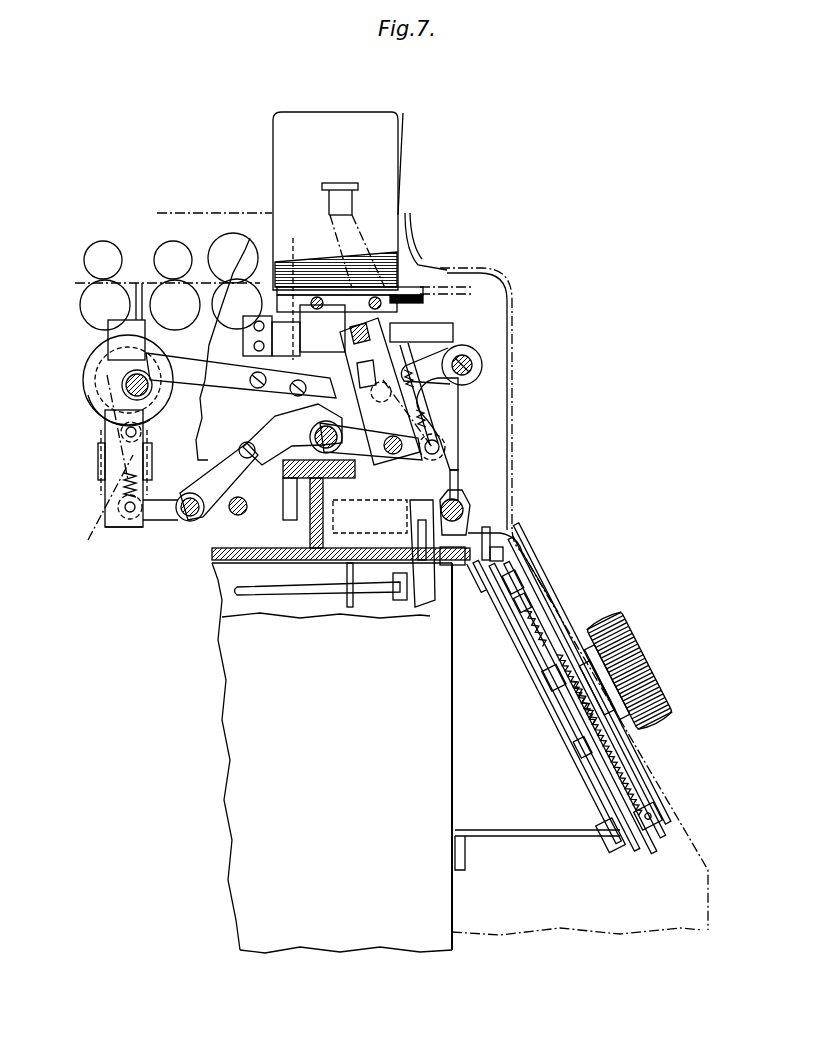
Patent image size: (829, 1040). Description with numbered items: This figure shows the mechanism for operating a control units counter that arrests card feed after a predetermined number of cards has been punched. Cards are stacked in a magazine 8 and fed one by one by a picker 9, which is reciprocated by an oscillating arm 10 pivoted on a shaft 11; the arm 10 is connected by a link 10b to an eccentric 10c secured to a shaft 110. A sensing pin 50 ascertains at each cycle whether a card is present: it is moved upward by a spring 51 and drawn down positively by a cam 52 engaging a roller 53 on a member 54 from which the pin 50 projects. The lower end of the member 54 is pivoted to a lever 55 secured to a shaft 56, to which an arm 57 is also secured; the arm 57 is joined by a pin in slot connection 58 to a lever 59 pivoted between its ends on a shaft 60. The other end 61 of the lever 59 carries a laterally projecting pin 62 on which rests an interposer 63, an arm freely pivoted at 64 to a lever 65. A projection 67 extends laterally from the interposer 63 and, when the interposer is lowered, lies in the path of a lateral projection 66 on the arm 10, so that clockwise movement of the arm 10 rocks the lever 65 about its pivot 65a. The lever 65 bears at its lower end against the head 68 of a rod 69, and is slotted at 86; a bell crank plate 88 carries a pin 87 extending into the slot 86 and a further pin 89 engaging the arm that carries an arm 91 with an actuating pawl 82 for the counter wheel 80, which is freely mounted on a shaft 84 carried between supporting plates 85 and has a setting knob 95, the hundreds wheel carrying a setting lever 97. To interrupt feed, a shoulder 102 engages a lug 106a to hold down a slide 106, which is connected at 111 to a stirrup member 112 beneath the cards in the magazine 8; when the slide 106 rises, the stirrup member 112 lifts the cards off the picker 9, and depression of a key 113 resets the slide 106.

The magazine 8 is at (338, 201).
The picker 9 is at (381, 392).
The oscillating arm 10 is at (436, 293).
The link 10b is at (224, 383).
The eccentric 10c is at (157, 410).
The shaft 11 is at (452, 472).
The sensing pin 50 is at (137, 283).
The spring 51 is at (107, 464).
The cam 52 is at (150, 372).
The roller 53 is at (130, 430).
The member 54 is at (127, 530).
The lever 55 is at (168, 520).
The shaft 56 is at (190, 515).
The arm 57 is at (218, 484).
The pin in slot connection 58 is at (241, 444).
The lever 59 is at (273, 432).
The shaft 60 is at (328, 445).
The other end of lever 61 is at (455, 398).
The laterally projecting pin 62 is at (433, 403).
The interposer 63 is at (463, 353).
The pivot 64 is at (475, 363).
The lever 65 is at (417, 503).
The pivot 65a is at (445, 448).
The lateral projection 66 is at (341, 342).
The projection 67 is at (390, 342).
The head 68 is at (397, 603).
The rod 69 is at (298, 592).
The counter wheel 80 is at (613, 763).
The actuating pawl 82 is at (537, 610).
The shaft 84 is at (560, 700).
The supporting plates 85 is at (577, 757).
The slot 86 is at (436, 512).
The pin 87 is at (424, 545).
The bell crank plate 88 is at (480, 530).
The pin 89 is at (500, 547).
The arm 91 is at (540, 572).
The setting knob 95 is at (655, 717).
The setting lever 97 is at (590, 616).
The shoulder 102 is at (620, 835).
The slide 106 is at (553, 677).
The lug 106a is at (647, 818).
The shaft 110 is at (140, 395).
The connection 111 is at (400, 288).
The stirrup member 112 is at (373, 300).
The key 113 is at (358, 186).